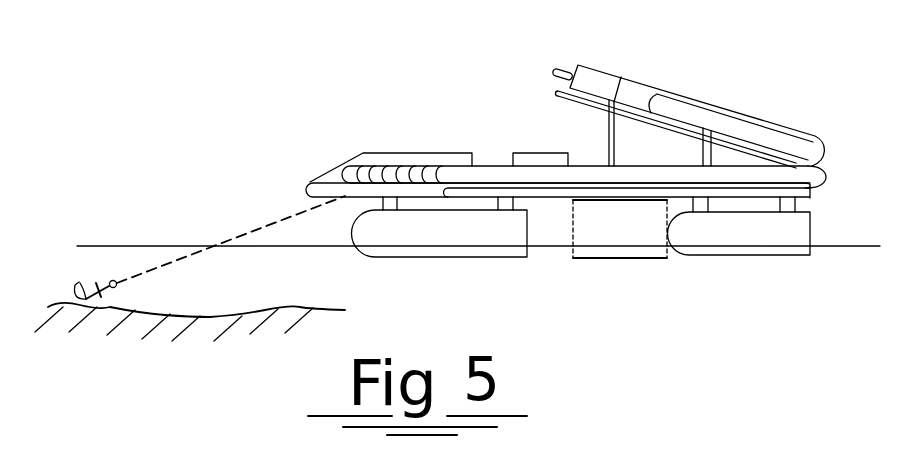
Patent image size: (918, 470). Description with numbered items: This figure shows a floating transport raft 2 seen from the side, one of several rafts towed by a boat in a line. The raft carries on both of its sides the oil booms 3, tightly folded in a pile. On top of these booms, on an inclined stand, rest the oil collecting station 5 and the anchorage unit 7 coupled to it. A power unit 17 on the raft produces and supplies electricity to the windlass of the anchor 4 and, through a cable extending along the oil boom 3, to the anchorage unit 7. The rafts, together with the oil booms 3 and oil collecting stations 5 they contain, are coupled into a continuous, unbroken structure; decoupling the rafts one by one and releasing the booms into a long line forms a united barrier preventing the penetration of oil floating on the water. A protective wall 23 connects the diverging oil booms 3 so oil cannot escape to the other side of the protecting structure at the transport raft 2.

The transport raft 2 is at (312, 185).
The oil boom 3 is at (823, 157).
The anchor 4 is at (90, 293).
The oil collecting station 5 is at (717, 118).
The anchorage unit 7 is at (608, 80).
The power unit 17 is at (533, 158).
The protective wall 23 is at (638, 240).